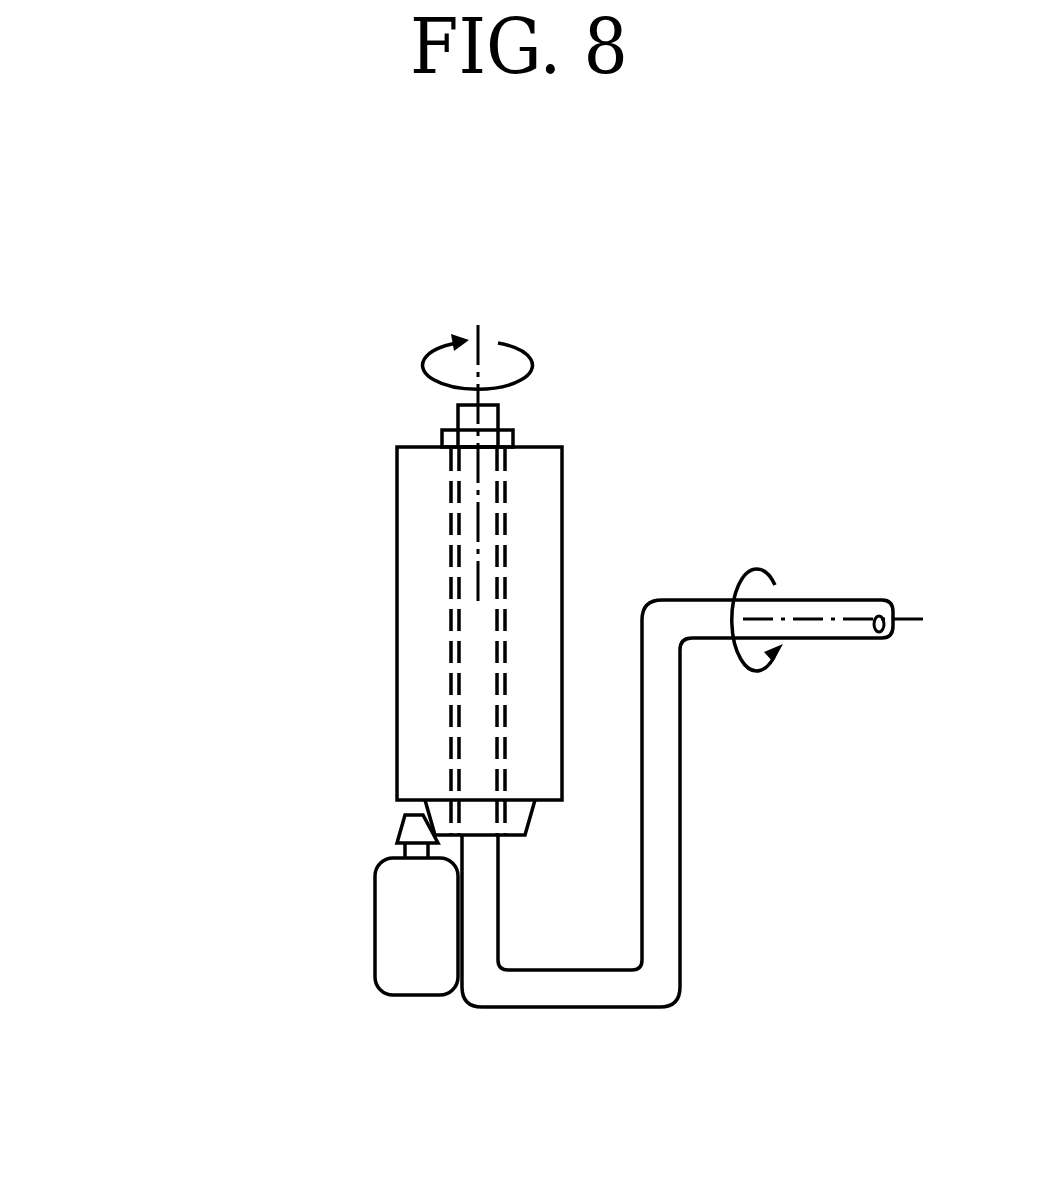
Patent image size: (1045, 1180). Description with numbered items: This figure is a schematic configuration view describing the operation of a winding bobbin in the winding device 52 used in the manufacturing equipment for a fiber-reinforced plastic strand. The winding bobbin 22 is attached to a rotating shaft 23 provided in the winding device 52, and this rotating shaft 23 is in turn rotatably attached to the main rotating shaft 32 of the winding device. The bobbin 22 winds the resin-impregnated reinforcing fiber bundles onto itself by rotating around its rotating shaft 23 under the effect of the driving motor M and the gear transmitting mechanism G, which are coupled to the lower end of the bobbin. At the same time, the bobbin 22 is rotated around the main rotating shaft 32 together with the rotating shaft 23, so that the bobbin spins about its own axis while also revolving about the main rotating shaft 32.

The winding device 52 is at (695, 304).
The rotating shaft 23 is at (467, 420).
The winding bobbin 22 is at (425, 567).
The main rotating shaft 32 is at (697, 618).
The gear transmitting mechanism G is at (400, 830).
The driving motor M is at (402, 947).